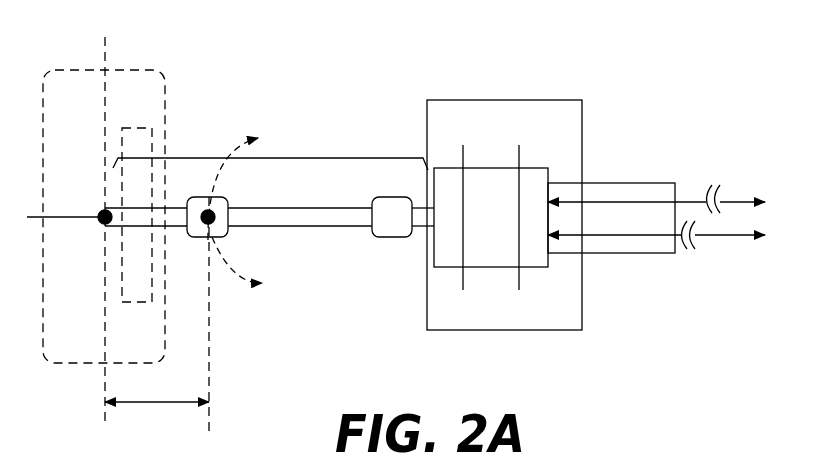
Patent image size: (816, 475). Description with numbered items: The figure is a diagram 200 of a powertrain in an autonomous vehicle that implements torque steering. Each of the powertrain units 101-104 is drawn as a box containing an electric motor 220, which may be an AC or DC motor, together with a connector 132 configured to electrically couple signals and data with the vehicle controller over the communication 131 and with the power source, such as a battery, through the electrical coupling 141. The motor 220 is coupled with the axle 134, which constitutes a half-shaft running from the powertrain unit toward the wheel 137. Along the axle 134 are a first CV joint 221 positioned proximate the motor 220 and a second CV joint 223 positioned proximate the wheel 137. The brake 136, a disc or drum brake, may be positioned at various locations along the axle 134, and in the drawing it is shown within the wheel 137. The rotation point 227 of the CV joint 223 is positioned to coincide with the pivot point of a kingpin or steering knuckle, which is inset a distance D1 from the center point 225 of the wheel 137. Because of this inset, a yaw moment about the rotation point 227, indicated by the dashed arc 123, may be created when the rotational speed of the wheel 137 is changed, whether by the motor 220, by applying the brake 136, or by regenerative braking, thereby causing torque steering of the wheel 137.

The diagram 200 is at (672, 48).
The powertrain units 101-104 is at (517, 100).
The electric motor 220 is at (508, 227).
The connector 132 is at (623, 183).
The communication 131 is at (683, 202).
The electrical coupling 141 is at (713, 237).
The axle 134 is at (297, 158).
The brake 136 is at (137, 128).
The wheel 137 is at (83, 107).
The first CV joint 221 is at (392, 237).
The CV joint 223 is at (228, 198).
The center point 225 is at (100, 224).
The rotation point 227 is at (214, 222).
The scan arc 123 is at (242, 276).
The distance D1 is at (165, 405).